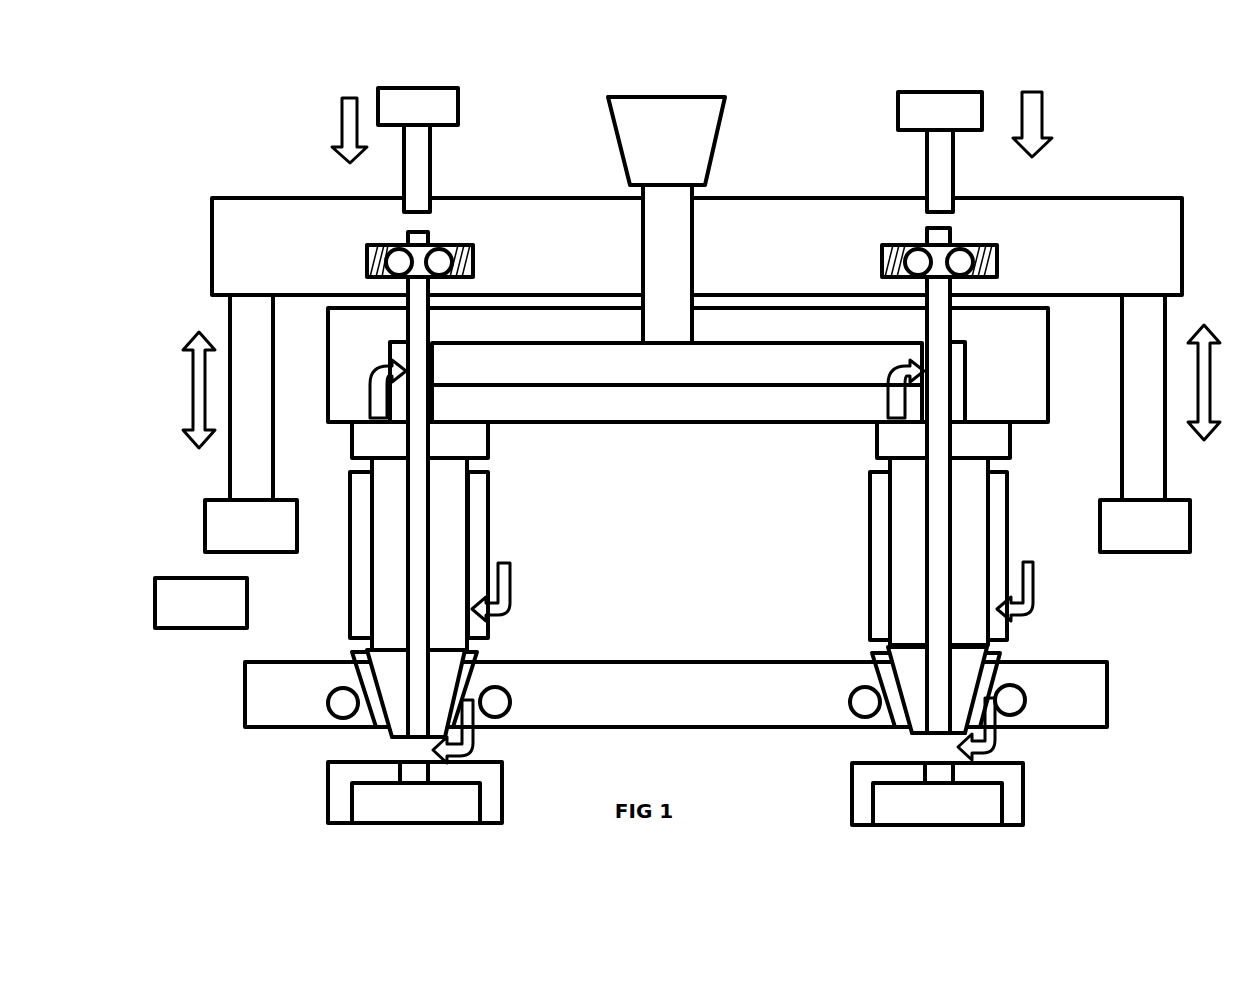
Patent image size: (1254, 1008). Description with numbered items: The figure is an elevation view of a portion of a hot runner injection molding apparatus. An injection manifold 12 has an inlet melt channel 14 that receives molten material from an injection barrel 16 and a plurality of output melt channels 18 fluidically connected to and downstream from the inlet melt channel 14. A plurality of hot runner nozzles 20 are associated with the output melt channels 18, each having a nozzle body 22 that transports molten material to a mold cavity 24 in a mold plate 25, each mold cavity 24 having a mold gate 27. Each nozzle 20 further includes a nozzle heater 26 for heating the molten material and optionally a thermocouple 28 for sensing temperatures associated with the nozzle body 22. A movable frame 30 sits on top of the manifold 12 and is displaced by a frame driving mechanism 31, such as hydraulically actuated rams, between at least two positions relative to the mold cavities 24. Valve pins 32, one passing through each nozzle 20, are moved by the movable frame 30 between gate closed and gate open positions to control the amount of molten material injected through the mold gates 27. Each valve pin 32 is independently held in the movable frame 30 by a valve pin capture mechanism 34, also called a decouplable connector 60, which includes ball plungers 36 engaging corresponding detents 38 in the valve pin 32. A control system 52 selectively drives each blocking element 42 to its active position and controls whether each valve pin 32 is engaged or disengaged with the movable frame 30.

The injection manifold 12 is at (1020, 358).
The inlet melt channel 14 is at (663, 307).
The injection barrel 16 is at (705, 95).
The output melt channels 18 is at (400, 390).
The hot runner nozzle 20 is at (510, 617).
The nozzle body 22 is at (908, 555).
The mold cavity 24 is at (412, 808).
The mold plate 25 is at (1078, 703).
The nozzle heater 26 is at (877, 520).
The mold gate 27 is at (413, 773).
The thermocouple 28 is at (1030, 590).
The movable frame 30 is at (297, 198).
The frame driving mechanism 31 is at (250, 402).
The valve pin 32 is at (417, 548).
The valve pin capture mechanism 34 is at (308, 265).
The ball plunger 36 is at (440, 248).
The detent 38 is at (418, 250).
The blocking element 42 is at (398, 97).
The control system 52 is at (212, 575).
The decouplable connector 60 is at (1005, 258).